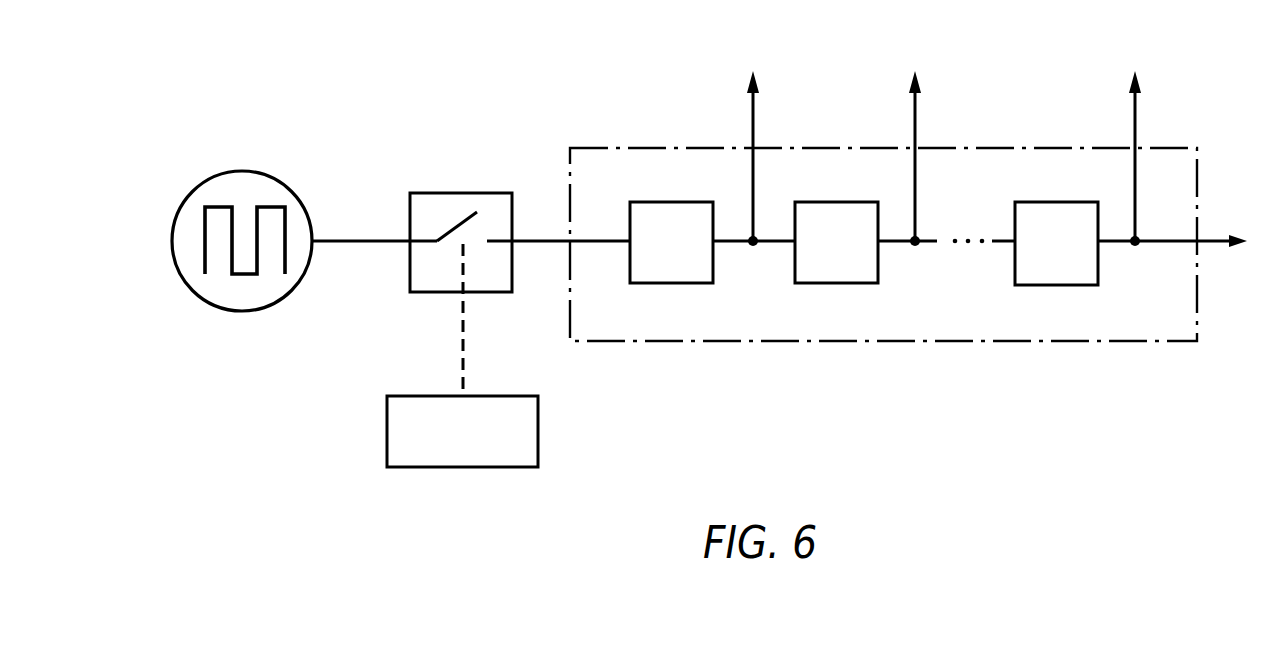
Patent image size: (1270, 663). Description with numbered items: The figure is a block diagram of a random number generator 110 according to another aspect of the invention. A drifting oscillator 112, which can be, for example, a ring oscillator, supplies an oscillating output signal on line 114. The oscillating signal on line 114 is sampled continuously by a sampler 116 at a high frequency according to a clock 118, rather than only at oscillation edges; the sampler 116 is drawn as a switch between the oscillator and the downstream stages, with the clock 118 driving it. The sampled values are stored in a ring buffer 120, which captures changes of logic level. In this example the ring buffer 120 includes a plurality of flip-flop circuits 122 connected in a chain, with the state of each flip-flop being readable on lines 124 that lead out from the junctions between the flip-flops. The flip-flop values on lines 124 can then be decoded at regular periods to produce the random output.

The random number generator 110 is at (905, 430).
The drifting oscillator 112 is at (241, 168).
The line 114 is at (352, 240).
The sampler 116 is at (463, 192).
The clock 118 is at (538, 437).
The ring buffer 120 is at (1123, 343).
The flip-flop circuits 122 is at (1055, 285).
The lines 124 is at (1134, 110).